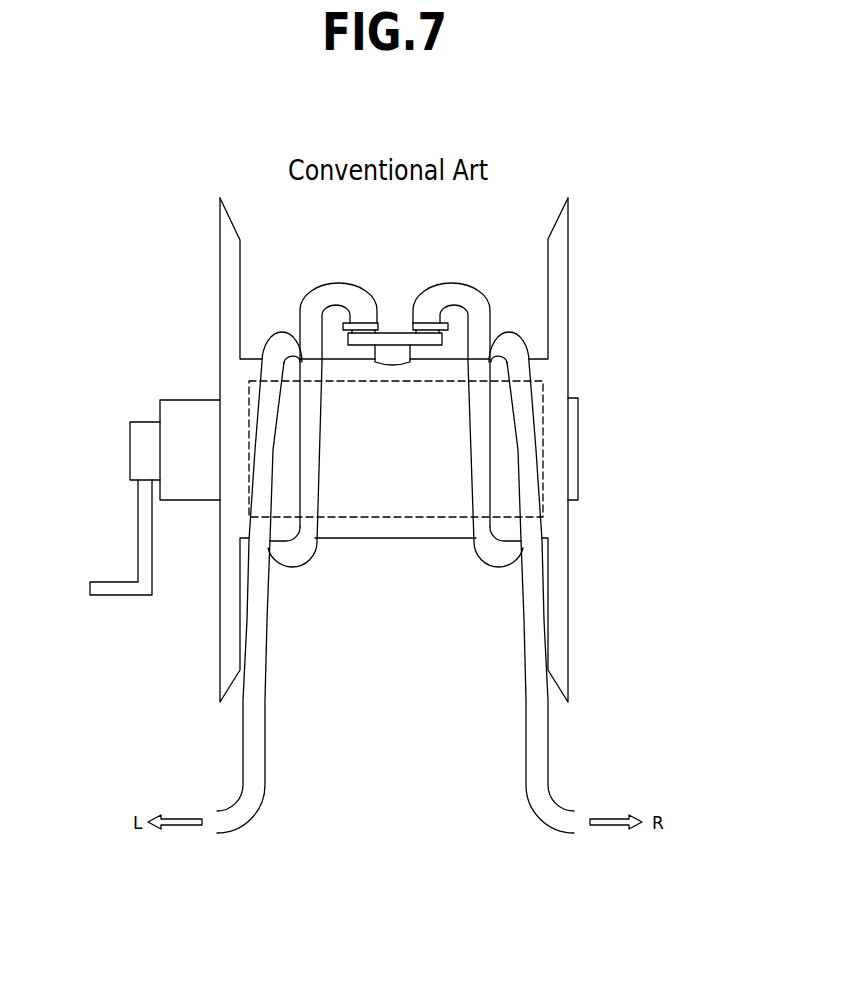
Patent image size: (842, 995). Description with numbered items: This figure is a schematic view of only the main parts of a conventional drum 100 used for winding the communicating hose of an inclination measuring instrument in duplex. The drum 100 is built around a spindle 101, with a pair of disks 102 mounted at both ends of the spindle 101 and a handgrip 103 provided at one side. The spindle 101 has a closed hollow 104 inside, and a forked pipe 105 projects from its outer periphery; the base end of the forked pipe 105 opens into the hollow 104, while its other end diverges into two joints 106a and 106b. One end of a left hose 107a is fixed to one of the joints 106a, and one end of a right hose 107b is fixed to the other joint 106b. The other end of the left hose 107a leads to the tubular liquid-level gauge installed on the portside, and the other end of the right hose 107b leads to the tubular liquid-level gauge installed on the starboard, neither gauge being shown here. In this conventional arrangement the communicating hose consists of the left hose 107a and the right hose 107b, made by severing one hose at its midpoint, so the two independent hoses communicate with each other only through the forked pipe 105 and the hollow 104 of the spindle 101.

The drum 100 is at (214, 242).
The spindle 101 is at (377, 527).
The disks 102 is at (228, 302).
The handgrip 103 is at (131, 589).
The closed hollow 104 is at (430, 500).
The forked pipe 105 is at (393, 357).
The joint 106a is at (356, 313).
The joint 106b is at (428, 310).
The left hose 107a is at (262, 738).
The right hose 107b is at (528, 740).